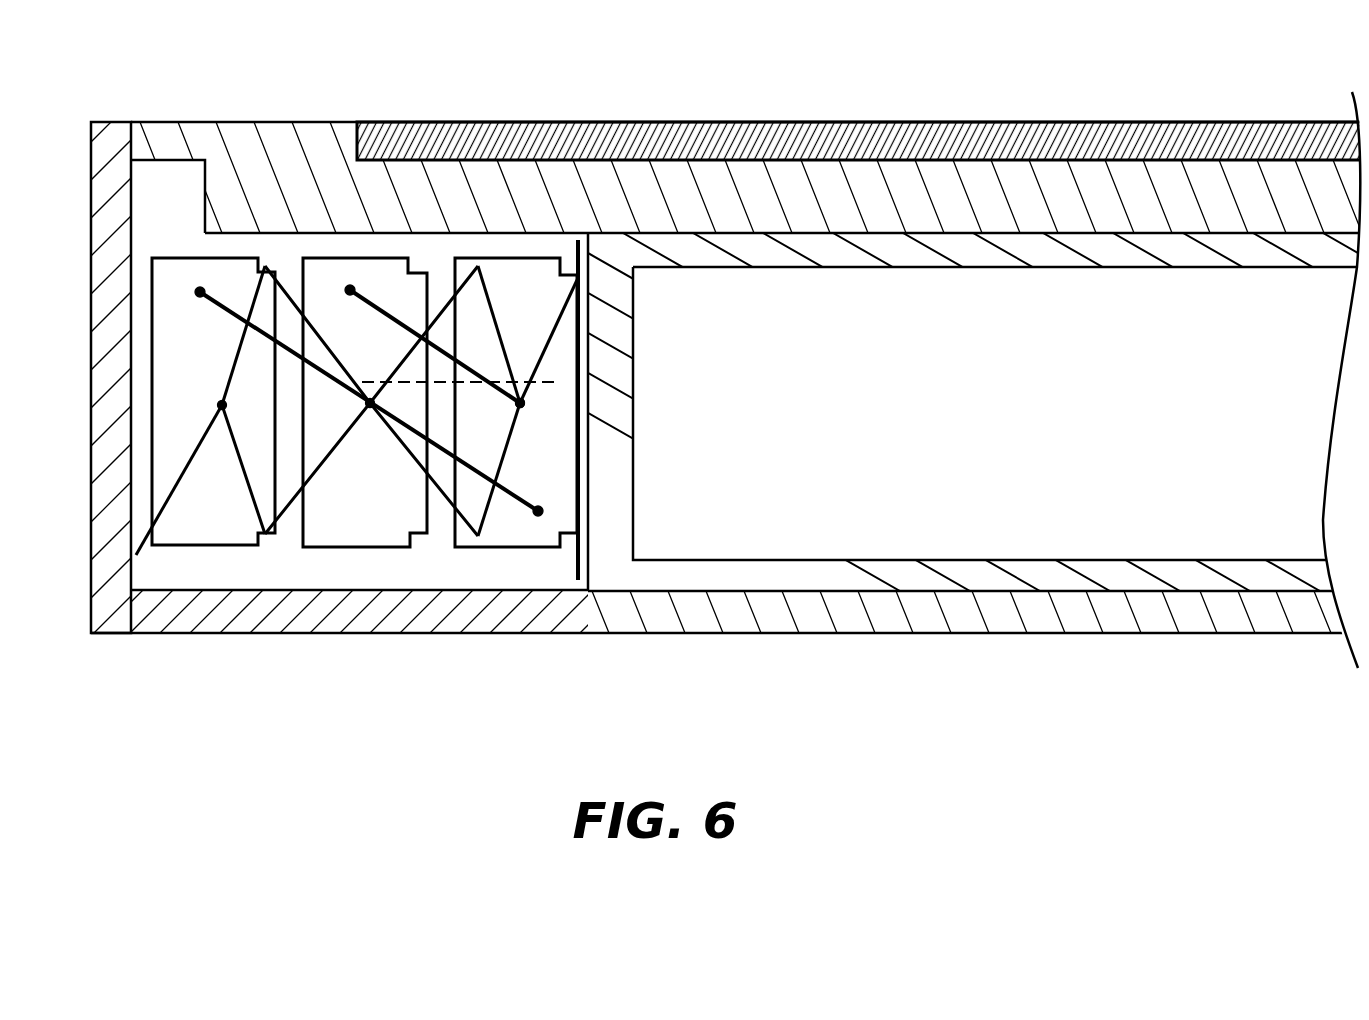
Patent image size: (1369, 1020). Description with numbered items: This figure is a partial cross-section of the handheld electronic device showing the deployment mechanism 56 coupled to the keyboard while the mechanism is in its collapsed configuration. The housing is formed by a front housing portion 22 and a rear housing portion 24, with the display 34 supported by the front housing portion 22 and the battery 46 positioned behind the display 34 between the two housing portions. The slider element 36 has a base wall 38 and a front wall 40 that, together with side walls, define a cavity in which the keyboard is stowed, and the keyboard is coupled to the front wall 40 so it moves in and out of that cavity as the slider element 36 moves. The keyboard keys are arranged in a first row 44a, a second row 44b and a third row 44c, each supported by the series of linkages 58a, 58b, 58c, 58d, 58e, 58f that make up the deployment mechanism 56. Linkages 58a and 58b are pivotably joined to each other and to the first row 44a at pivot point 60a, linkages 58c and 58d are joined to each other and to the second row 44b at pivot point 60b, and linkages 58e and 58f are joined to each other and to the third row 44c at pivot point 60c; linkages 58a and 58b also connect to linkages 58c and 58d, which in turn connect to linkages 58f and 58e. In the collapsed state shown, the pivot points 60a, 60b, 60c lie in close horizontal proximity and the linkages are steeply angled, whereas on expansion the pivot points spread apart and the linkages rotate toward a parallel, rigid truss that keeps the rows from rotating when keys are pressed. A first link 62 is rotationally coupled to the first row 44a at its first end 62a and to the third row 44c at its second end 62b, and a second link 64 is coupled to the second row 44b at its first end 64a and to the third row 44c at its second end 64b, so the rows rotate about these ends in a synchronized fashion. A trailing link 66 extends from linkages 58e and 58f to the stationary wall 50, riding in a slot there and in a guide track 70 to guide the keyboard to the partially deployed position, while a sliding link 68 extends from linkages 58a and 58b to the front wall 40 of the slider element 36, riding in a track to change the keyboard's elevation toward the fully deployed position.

The front housing portion 22 is at (1247, 190).
The rear housing portion 24 is at (1056, 620).
The display 34 is at (902, 124).
The slider element 36 is at (70, 436).
The base wall 38 is at (397, 618).
The front wall 40 is at (98, 492).
The first row 44a is at (182, 270).
The second row 44b is at (331, 277).
The third row 44c is at (528, 272).
The battery 46 is at (821, 412).
The stationary wall 50 is at (577, 565).
The deployment mechanism 56 is at (272, 562).
The linkage 58a is at (234, 360).
The linkage 58b is at (234, 457).
The linkage 58c is at (390, 432).
The linkage 58d is at (306, 483).
The linkage 58e is at (490, 292).
The linkage 58f is at (505, 463).
The pivot point 60a is at (220, 405).
The pivot point 60b is at (368, 404).
The pivot point 60c is at (518, 404).
The first link 62 is at (369, 401).
The first end 62a is at (204, 291).
The second end 62b is at (536, 511).
The second link 64 is at (400, 326).
The first end 64a is at (345, 294).
The second end 64b is at (524, 408).
The trailing link 66 is at (557, 338).
The sliding link 68 is at (137, 548).
The guide track 70 is at (562, 385).